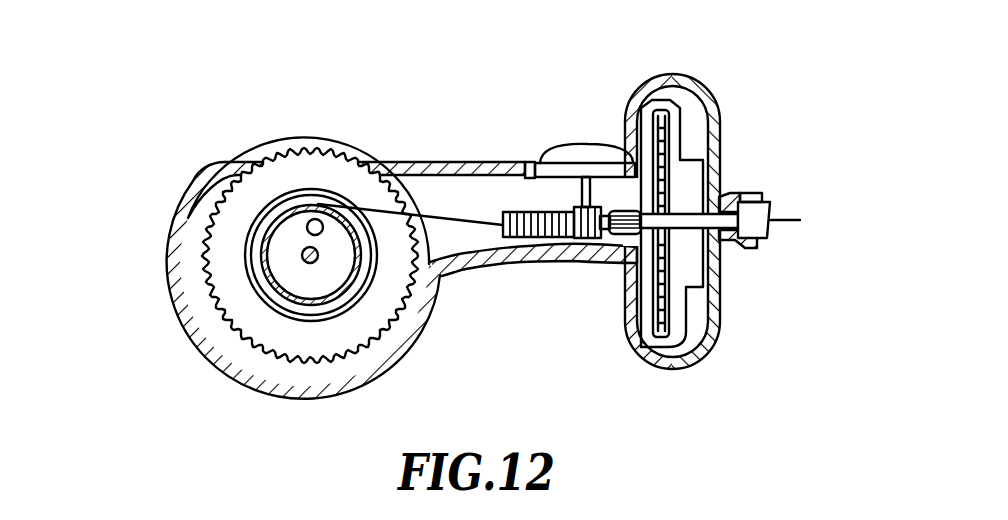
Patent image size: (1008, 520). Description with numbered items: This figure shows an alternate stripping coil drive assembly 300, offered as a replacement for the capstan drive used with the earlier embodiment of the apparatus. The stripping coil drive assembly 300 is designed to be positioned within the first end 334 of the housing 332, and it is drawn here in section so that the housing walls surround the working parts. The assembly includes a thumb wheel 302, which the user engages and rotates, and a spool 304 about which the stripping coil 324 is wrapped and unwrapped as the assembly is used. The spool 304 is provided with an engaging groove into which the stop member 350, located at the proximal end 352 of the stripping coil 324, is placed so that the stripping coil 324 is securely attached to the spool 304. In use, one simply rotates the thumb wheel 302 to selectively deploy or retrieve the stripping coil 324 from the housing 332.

The stripping coil drive assembly 300 is at (310, 140).
The thumb wheel 302 is at (353, 160).
The spool 304 is at (260, 290).
The stripping coil 324 is at (456, 213).
The housing 332 is at (215, 162).
The first end 334 is at (173, 285).
The stop member 350 is at (320, 235).
The proximal end 352 is at (321, 233).